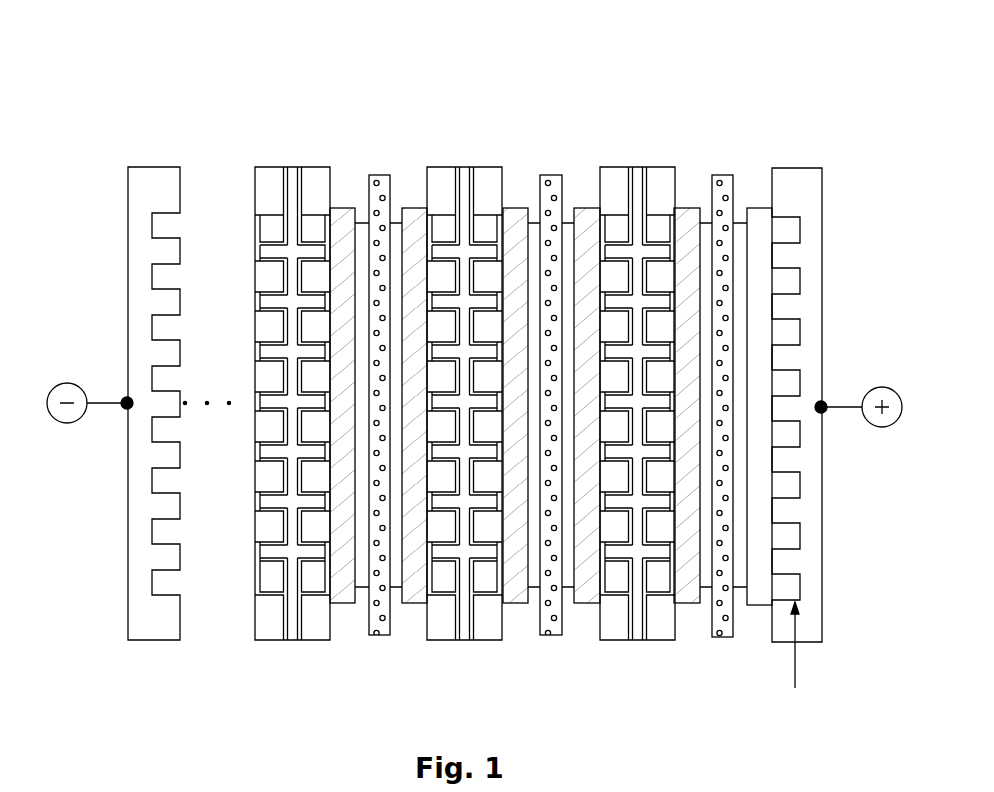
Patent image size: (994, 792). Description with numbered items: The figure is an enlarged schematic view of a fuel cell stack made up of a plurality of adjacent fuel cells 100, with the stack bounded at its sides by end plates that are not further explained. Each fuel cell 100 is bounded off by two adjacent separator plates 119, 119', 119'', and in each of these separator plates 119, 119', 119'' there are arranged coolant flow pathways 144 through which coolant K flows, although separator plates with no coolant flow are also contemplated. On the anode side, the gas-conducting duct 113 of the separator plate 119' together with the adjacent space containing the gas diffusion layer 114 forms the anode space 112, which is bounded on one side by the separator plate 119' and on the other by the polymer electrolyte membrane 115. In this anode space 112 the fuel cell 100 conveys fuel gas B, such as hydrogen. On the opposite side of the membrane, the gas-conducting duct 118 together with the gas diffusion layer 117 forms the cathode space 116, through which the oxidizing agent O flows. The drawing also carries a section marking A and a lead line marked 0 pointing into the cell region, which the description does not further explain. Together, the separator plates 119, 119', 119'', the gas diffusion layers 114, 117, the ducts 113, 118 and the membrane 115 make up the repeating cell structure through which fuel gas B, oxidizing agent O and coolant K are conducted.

The fuel cell 100 is at (574, 138).
The anode space 112 is at (304, 355).
The gas-conducting duct 113 is at (318, 218).
The gas diffusion layer 114 is at (345, 196).
The polymer electrolyte membrane 115 is at (379, 163).
The cathode space 116 is at (457, 355).
The gas diffusion layer 117 is at (413, 196).
The gas-conducting duct 118 is at (440, 220).
The separator plate 119 is at (523, 669).
The separator plate 119' is at (229, 667).
The separator plate 119'' is at (676, 437).
The coolant flow pathway 144 is at (283, 602).
The cell 0 is at (460, 221).
The section line A is at (336, 770).
The fuel gas B is at (315, 432).
The coolant K is at (292, 612).
The oxidizing agent O is at (412, 630).